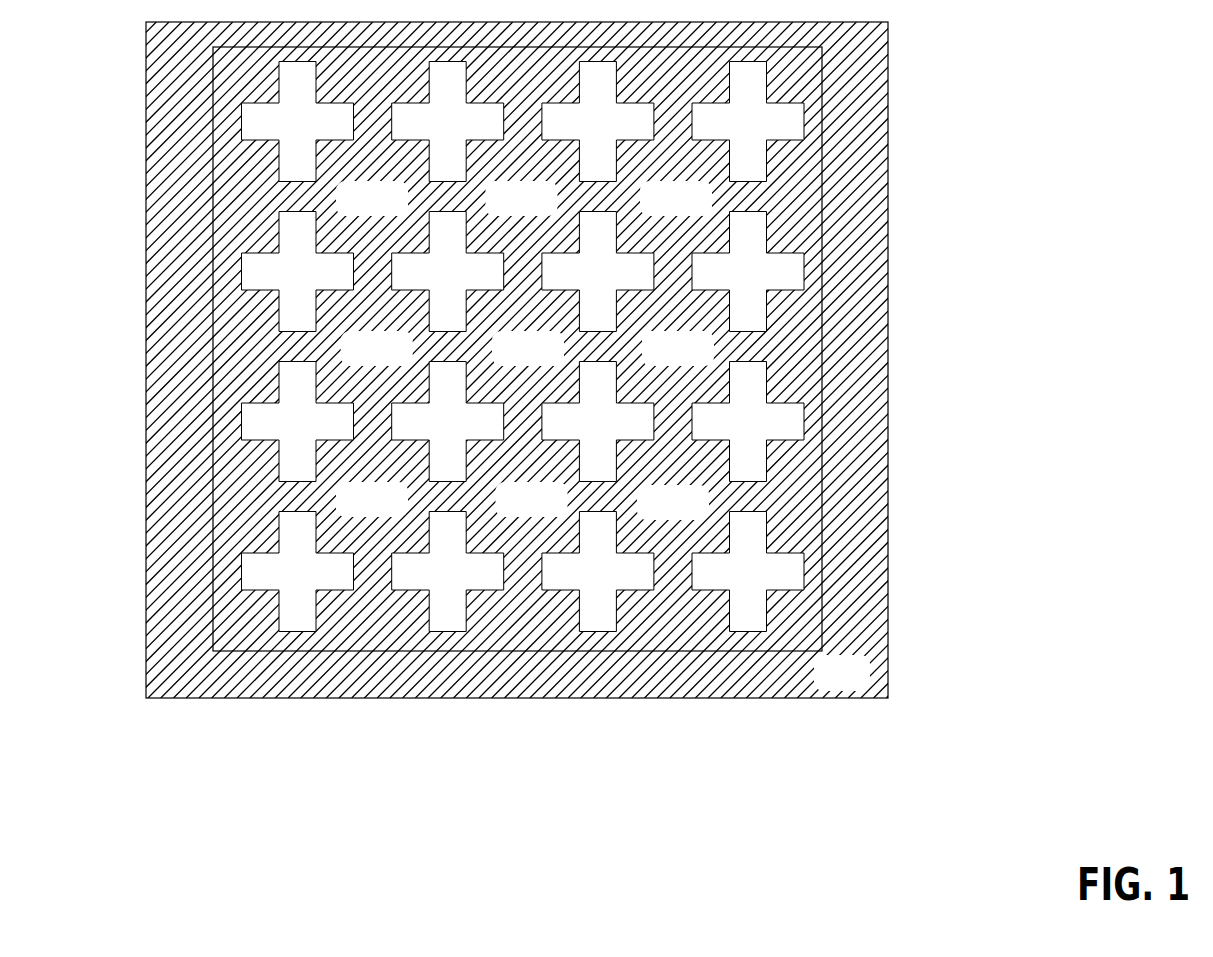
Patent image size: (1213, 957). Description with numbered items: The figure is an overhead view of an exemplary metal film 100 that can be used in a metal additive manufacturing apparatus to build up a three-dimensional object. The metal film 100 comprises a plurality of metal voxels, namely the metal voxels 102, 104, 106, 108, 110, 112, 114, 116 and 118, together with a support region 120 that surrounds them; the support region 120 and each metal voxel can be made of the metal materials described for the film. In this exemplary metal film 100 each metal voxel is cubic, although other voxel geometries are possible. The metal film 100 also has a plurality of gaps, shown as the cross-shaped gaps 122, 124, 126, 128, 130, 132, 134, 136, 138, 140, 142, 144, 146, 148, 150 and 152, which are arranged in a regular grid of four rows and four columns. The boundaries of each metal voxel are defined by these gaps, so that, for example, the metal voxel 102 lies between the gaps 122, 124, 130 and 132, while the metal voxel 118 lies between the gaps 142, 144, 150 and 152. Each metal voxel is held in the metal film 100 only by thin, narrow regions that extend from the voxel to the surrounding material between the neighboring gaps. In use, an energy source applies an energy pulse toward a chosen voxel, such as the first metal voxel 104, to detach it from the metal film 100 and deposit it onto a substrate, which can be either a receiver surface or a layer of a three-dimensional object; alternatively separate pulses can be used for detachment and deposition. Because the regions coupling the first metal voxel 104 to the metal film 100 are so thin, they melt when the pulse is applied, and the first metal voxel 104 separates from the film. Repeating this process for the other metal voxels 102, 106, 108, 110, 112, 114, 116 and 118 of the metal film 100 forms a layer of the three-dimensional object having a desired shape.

The metal film 100 is at (963, 238).
The metal voxel 102 is at (354, 210).
The first metal voxel 104 is at (503, 210).
The metal voxel 106 is at (658, 210).
The metal voxel 108 is at (358, 360).
The metal voxel 110 is at (510, 360).
The metal voxel 112 is at (660, 360).
The metal voxel 114 is at (354, 512).
The metal voxel 116 is at (513, 512).
The metal voxel 118 is at (654, 514).
The support region 120 is at (822, 684).
The gap 122 is at (278, 134).
The gap 124 is at (428, 134).
The gap 126 is at (578, 134).
The gap 128 is at (728, 134).
The gap 130 is at (278, 284).
The gap 132 is at (428, 284).
The gap 134 is at (578, 284).
The gap 136 is at (728, 284).
The gap 138 is at (278, 434).
The gap 140 is at (428, 434).
The gap 142 is at (578, 434).
The gap 144 is at (728, 434).
The gap 146 is at (278, 584).
The gap 148 is at (428, 584).
The gap 150 is at (578, 584).
The gap 152 is at (728, 584).